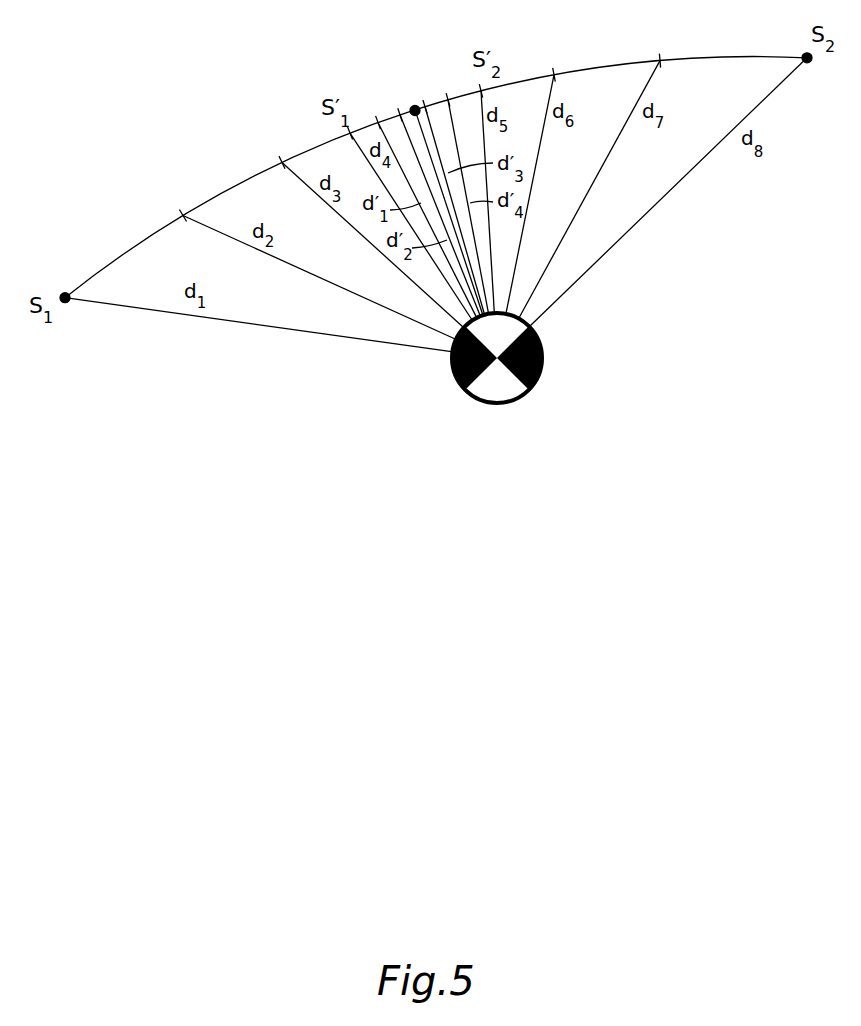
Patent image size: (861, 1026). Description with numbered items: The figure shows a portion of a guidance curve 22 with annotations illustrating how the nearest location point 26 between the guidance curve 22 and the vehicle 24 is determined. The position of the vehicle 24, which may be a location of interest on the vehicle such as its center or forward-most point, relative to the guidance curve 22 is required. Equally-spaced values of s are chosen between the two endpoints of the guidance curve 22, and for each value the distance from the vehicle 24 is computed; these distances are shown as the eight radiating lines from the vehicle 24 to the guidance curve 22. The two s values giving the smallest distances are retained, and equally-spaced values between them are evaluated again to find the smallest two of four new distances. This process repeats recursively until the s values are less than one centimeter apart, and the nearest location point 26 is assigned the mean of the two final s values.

The guidance curve 22 is at (240, 184).
The vehicle 24 is at (543, 340).
The nearest location point 26 is at (414, 106).